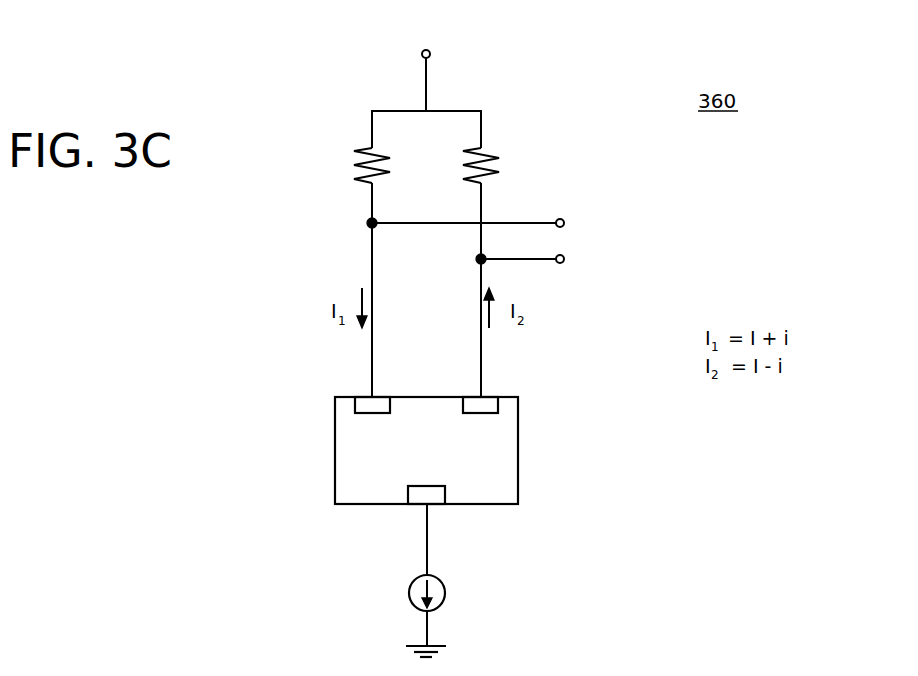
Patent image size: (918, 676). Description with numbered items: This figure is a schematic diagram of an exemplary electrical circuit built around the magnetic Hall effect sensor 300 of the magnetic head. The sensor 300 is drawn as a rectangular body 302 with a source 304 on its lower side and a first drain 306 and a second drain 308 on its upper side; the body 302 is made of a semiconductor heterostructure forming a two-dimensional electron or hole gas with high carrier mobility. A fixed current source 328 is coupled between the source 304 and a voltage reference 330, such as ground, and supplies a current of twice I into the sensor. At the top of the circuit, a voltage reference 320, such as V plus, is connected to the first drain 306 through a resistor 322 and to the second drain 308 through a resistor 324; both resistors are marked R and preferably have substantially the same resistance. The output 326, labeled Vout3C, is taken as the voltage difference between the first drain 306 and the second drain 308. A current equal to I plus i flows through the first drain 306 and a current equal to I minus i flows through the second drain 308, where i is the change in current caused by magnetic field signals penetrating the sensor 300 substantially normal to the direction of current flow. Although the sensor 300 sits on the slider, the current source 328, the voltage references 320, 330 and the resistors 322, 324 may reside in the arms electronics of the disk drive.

The Hall effect sensor 300 is at (413, 447).
The body 302 is at (518, 449).
The source 304 is at (425, 495).
The first drain 306 is at (378, 405).
The second drain 308 is at (477, 405).
The voltage reference 320 is at (430, 52).
The resistor 322 is at (357, 162).
The resistor 324 is at (497, 160).
The output 326 is at (527, 242).
The fixed current source 328 is at (409, 590).
The voltage reference 330 is at (445, 655).